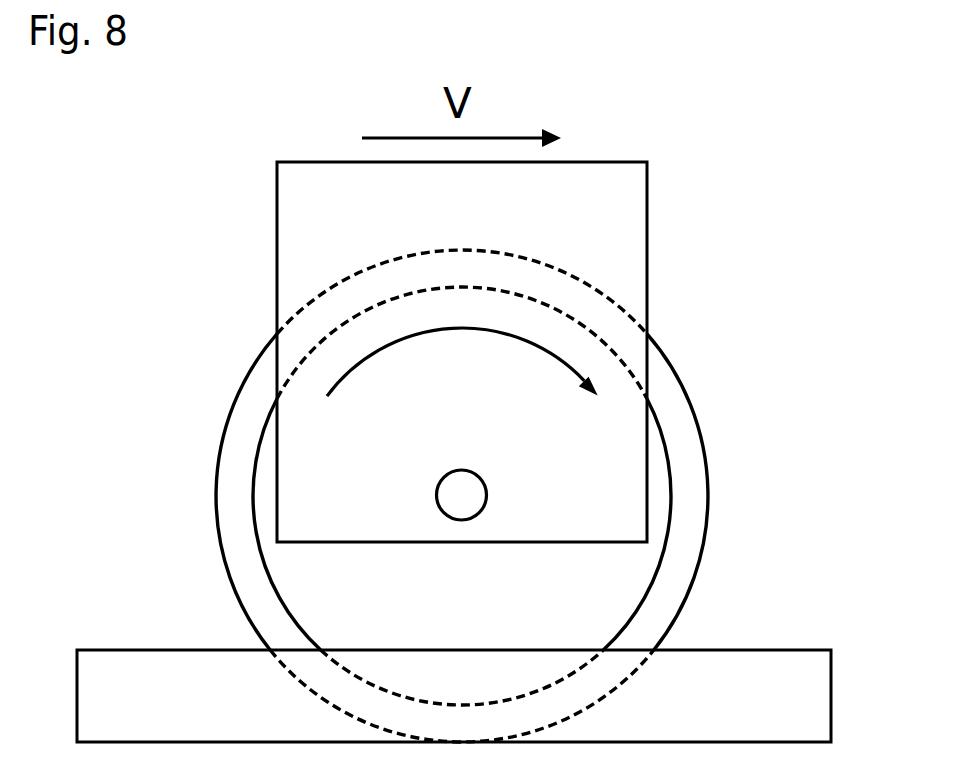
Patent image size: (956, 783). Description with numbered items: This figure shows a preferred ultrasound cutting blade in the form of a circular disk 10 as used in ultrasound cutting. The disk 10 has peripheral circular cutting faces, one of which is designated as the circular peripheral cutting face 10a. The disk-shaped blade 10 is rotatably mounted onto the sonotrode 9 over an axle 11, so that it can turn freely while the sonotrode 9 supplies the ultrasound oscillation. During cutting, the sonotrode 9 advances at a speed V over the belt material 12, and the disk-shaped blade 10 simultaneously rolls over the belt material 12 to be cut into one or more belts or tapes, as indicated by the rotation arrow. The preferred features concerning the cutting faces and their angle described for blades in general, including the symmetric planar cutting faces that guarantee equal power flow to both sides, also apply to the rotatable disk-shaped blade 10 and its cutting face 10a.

The sonotrode 9 is at (605, 260).
The disk 10 is at (590, 567).
The circular peripheral cutting face 10a is at (692, 483).
The axle 11 is at (456, 494).
The belt material 12 is at (203, 687).